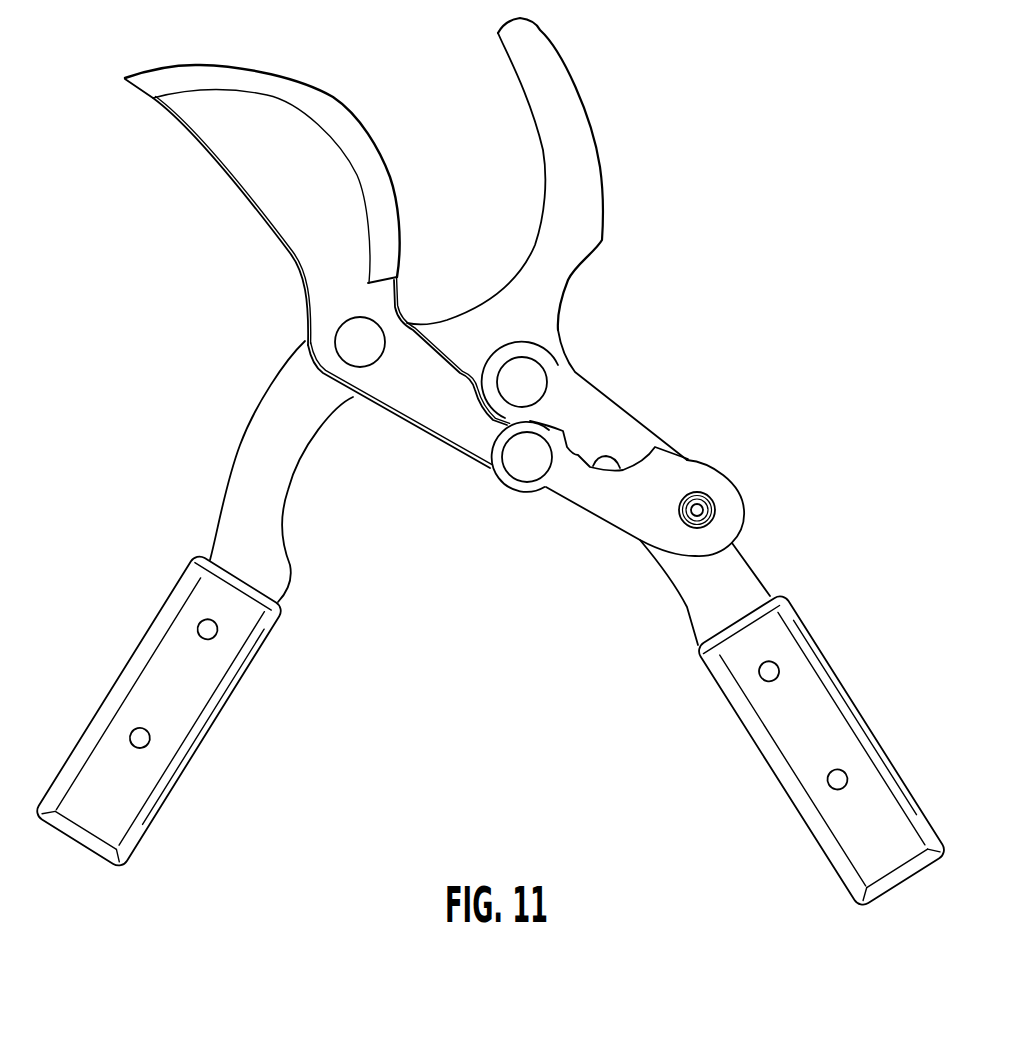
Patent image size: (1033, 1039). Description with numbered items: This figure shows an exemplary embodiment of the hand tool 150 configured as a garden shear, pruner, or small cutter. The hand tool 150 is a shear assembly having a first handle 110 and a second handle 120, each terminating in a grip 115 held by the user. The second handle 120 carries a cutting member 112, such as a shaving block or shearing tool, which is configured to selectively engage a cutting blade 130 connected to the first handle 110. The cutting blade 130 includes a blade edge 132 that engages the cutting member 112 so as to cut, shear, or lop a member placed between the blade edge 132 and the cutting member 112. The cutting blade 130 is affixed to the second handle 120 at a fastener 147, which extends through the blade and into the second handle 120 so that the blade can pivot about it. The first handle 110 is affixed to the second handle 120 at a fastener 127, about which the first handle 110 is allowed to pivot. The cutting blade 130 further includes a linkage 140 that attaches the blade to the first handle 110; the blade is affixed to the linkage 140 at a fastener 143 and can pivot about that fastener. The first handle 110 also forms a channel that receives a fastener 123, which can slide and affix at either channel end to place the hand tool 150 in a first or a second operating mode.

The first handle 110 is at (616, 435).
The cutting member 112 is at (570, 153).
The grip 115 is at (105, 785).
The second handle 120 is at (243, 485).
The fastener 123 is at (708, 500).
The fastener 127 is at (527, 382).
The cutting blade 130 is at (262, 172).
The blade edge 132 is at (325, 88).
The linkage 140 is at (585, 505).
The fastener 143 is at (527, 463).
The fastener 147 is at (350, 345).
The hand tool 150 is at (840, 108).